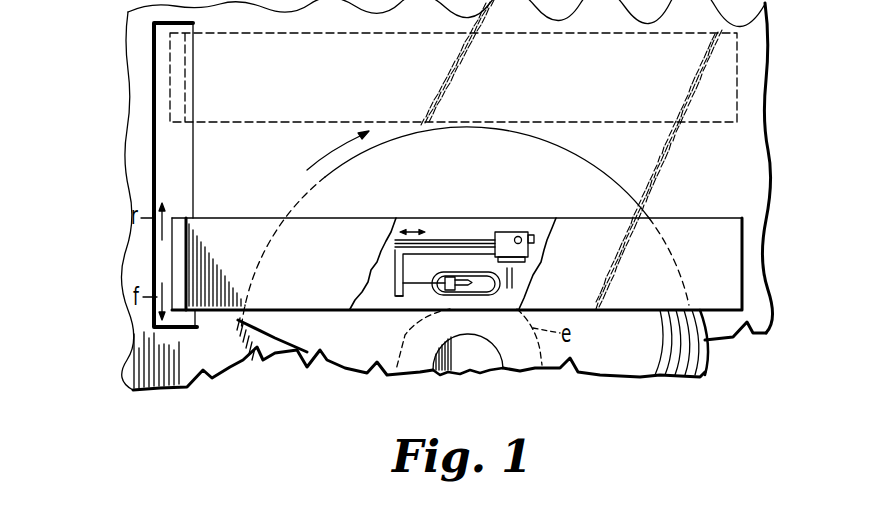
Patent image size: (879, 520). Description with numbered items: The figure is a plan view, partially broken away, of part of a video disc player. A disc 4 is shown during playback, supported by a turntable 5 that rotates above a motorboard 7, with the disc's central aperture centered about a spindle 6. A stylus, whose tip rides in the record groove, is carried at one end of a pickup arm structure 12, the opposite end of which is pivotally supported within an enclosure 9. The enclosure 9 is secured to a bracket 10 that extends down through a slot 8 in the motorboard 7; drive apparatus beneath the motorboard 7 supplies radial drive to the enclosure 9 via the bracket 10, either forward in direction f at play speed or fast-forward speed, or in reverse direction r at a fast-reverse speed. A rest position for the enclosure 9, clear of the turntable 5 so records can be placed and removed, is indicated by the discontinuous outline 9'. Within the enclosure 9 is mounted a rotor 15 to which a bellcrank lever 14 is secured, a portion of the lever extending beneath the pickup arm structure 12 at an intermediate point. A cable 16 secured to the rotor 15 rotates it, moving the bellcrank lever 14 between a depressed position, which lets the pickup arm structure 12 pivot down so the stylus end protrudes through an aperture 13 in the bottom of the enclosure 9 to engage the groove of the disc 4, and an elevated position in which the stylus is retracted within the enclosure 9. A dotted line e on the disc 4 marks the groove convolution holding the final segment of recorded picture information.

The disc 4 is at (702, 357).
The turntable 5 is at (274, 358).
The spindle 6 is at (490, 373).
The motorboard 7 is at (760, 253).
The slot 8 is at (150, 157).
The enclosure 9 is at (457, 244).
The rest position of enclosure 9' is at (453, 61).
The bracket 10 is at (180, 222).
The pickup arm structure 12 is at (398, 298).
The aperture 13 is at (477, 292).
The bellcrank lever 14 is at (395, 256).
The rotor 15 is at (510, 231).
The cable 16 is at (441, 239).